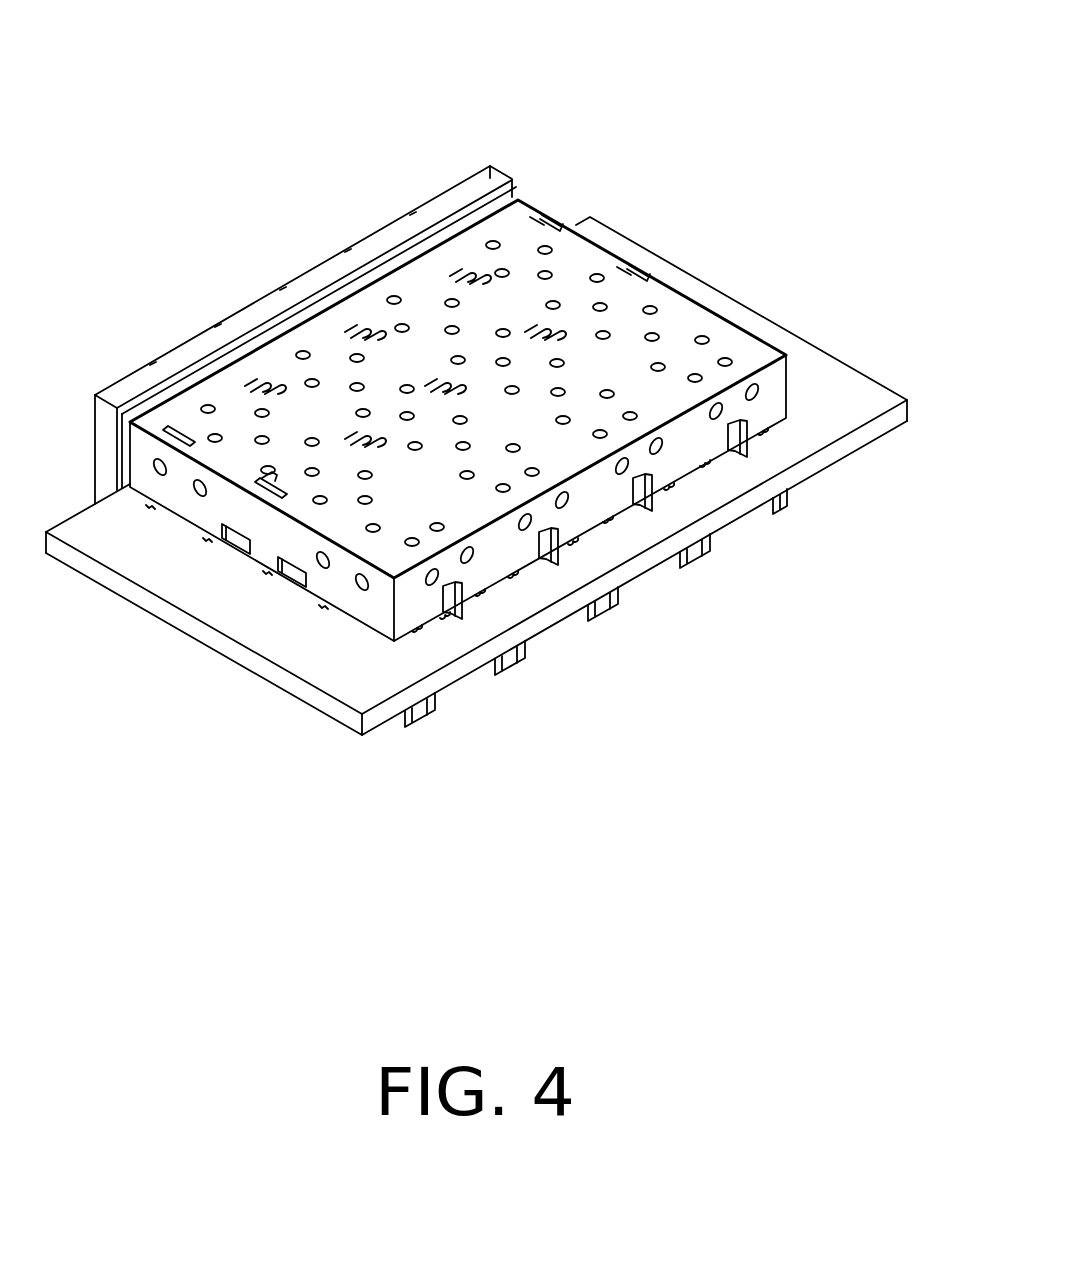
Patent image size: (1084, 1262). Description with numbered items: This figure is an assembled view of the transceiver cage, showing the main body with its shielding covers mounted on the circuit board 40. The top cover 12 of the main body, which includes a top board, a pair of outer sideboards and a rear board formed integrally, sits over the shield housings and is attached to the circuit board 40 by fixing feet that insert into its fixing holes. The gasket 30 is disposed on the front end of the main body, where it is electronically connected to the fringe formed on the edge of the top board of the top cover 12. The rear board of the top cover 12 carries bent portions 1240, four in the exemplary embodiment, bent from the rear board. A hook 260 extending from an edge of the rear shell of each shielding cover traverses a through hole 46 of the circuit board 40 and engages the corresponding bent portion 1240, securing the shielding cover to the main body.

The top cover 12 is at (682, 322).
The gasket 30 is at (481, 188).
The circuit board 40 is at (828, 398).
The through hole 46 is at (733, 458).
The hook 260 is at (467, 597).
The bent portion 1240 is at (447, 615).